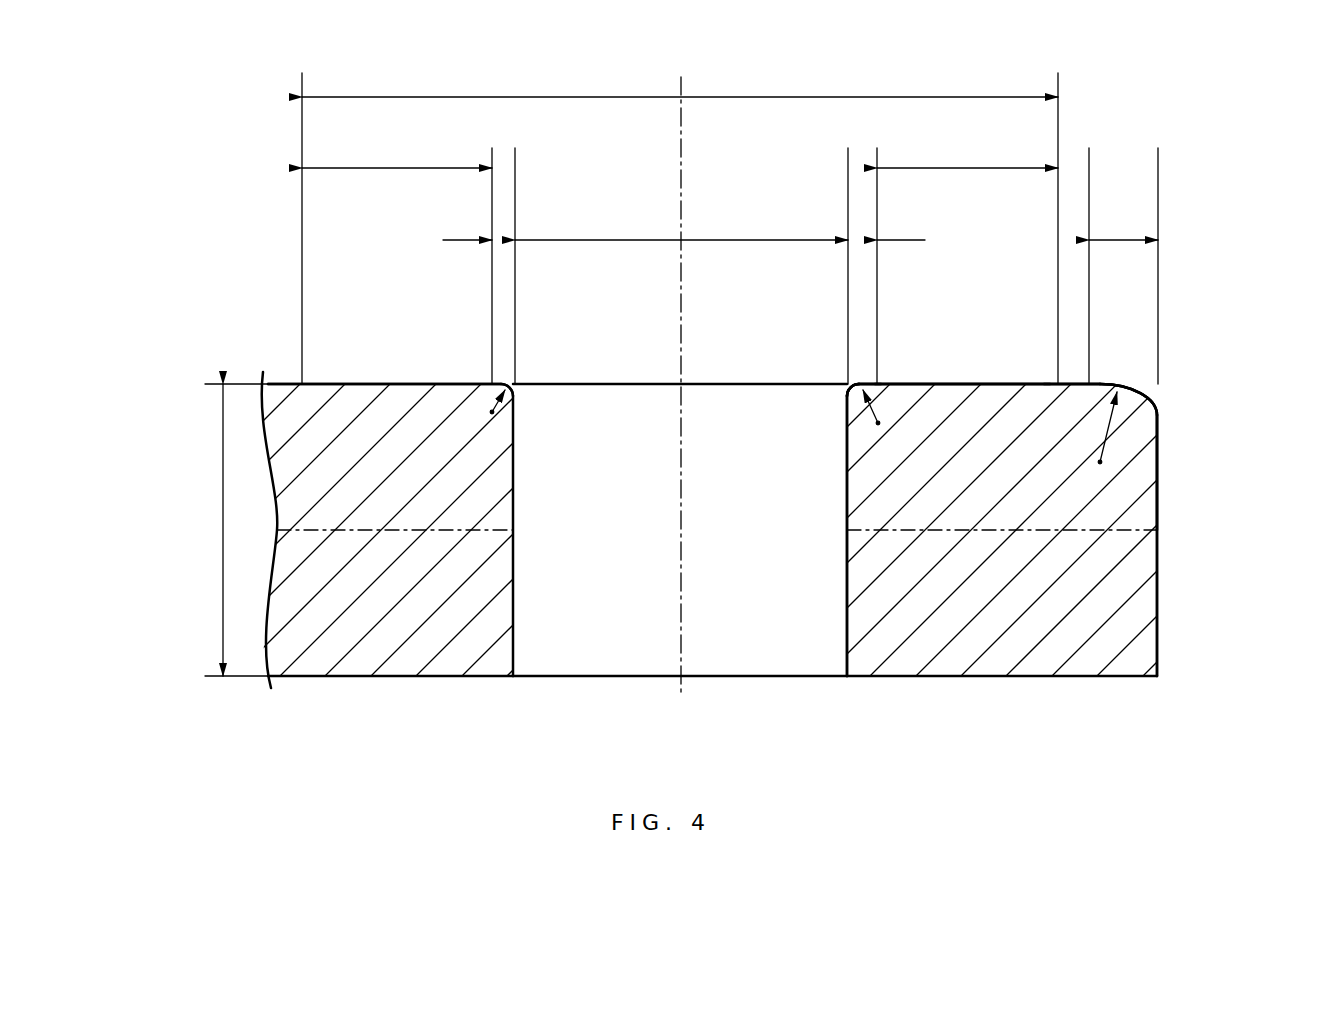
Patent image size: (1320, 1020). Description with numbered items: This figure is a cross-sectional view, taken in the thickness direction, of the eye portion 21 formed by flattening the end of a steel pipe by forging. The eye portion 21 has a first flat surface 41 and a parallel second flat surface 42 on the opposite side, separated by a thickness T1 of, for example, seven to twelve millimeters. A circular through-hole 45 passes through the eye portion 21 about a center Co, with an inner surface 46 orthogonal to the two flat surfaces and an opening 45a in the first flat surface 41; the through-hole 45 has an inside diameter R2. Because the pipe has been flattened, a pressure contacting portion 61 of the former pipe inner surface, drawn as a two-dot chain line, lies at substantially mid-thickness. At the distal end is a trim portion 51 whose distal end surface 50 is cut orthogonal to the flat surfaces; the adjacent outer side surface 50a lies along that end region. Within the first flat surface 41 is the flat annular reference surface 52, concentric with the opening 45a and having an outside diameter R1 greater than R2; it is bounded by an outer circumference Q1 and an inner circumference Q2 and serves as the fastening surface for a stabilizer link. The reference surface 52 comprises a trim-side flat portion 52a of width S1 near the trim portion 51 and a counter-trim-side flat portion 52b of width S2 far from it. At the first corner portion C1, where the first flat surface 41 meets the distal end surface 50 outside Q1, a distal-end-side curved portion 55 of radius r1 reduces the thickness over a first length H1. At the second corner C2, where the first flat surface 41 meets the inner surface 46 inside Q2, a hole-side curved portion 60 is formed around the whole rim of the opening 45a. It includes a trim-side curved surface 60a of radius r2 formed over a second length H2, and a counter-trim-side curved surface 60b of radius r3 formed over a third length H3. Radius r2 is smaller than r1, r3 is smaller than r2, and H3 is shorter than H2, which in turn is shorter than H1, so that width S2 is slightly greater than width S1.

The first flat surface 41 is at (420, 384).
The second flat surface 42 is at (435, 676).
The through-hole 45 is at (640, 625).
The opening 45a is at (636, 384).
The inner surface 46 is at (847, 620).
The distal end surface 50 is at (1157, 565).
The outer side surface 50a is at (1157, 432).
The trim portion 51 is at (1160, 500).
The annular reference surface 52 is at (1000, 384).
The trim-side flat portion 52a is at (963, 384).
The counter-trim-side flat portion 52b is at (378, 384).
The distal-end-side curved portion 55 is at (1138, 388).
The hole-side curved portion 60 is at (855, 390).
The trim-side curved surface 60a is at (862, 390).
The counter-trim-side curved surface 60b is at (503, 386).
The pressure contacting portion 61 is at (492, 528).
The eye portion 21 is at (988, 663).
The radius of curvature of the distal-end-side curved portion r1 is at (1105, 440).
The radius of curvature of the trim-side curved surface r2 is at (858, 407).
The radius of curvature of the counter-trim-side curved surface r3 is at (500, 405).
The outer circumference of the annular reference surface Q1 is at (1047, 384).
The inner circumference of the annular reference surface Q2 is at (878, 384).
The first corner portion C1 is at (1175, 381).
The second corner C2 is at (836, 370).
The thickness of the eye portion T1 is at (222, 525).
The center of the through-hole Co is at (681, 373).
The outside diameter of the annular reference surface R1 is at (757, 97).
The inside diameter of the through-hole R2 is at (731, 240).
The width of the trim-side flat portion S1 is at (968, 168).
The width of the counter-trim-side flat portion S2 is at (397, 168).
The first length H1 is at (1120, 240).
The second length H2 is at (866, 240).
The third length H3 is at (503, 240).